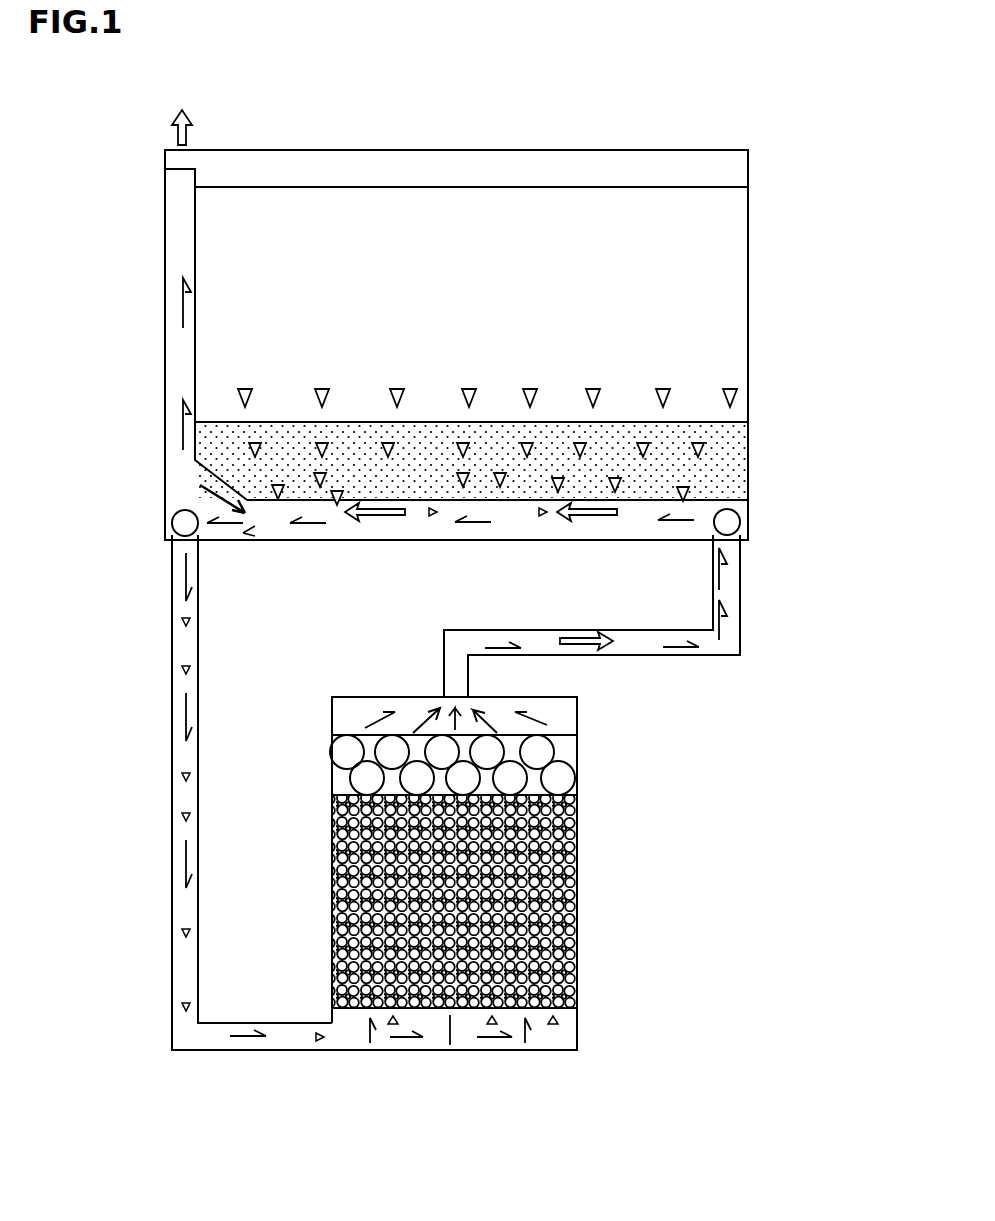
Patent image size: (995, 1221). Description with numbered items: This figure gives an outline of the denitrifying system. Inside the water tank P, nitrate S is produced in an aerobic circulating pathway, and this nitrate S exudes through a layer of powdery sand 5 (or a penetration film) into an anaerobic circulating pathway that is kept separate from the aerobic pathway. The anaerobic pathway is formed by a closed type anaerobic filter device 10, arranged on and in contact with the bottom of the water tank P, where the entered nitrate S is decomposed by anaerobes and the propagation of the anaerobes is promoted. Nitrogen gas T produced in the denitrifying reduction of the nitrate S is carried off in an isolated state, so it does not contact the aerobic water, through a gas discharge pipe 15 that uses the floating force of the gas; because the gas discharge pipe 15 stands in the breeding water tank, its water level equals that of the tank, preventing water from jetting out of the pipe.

The water tank P is at (722, 226).
The gas discharge pipe 15 is at (183, 227).
The powdery sand 5 is at (728, 445).
The nitrate S is at (530, 382).
The nitrogen gas T is at (183, 425).
The closed type anaerobic filter device 10 is at (577, 845).